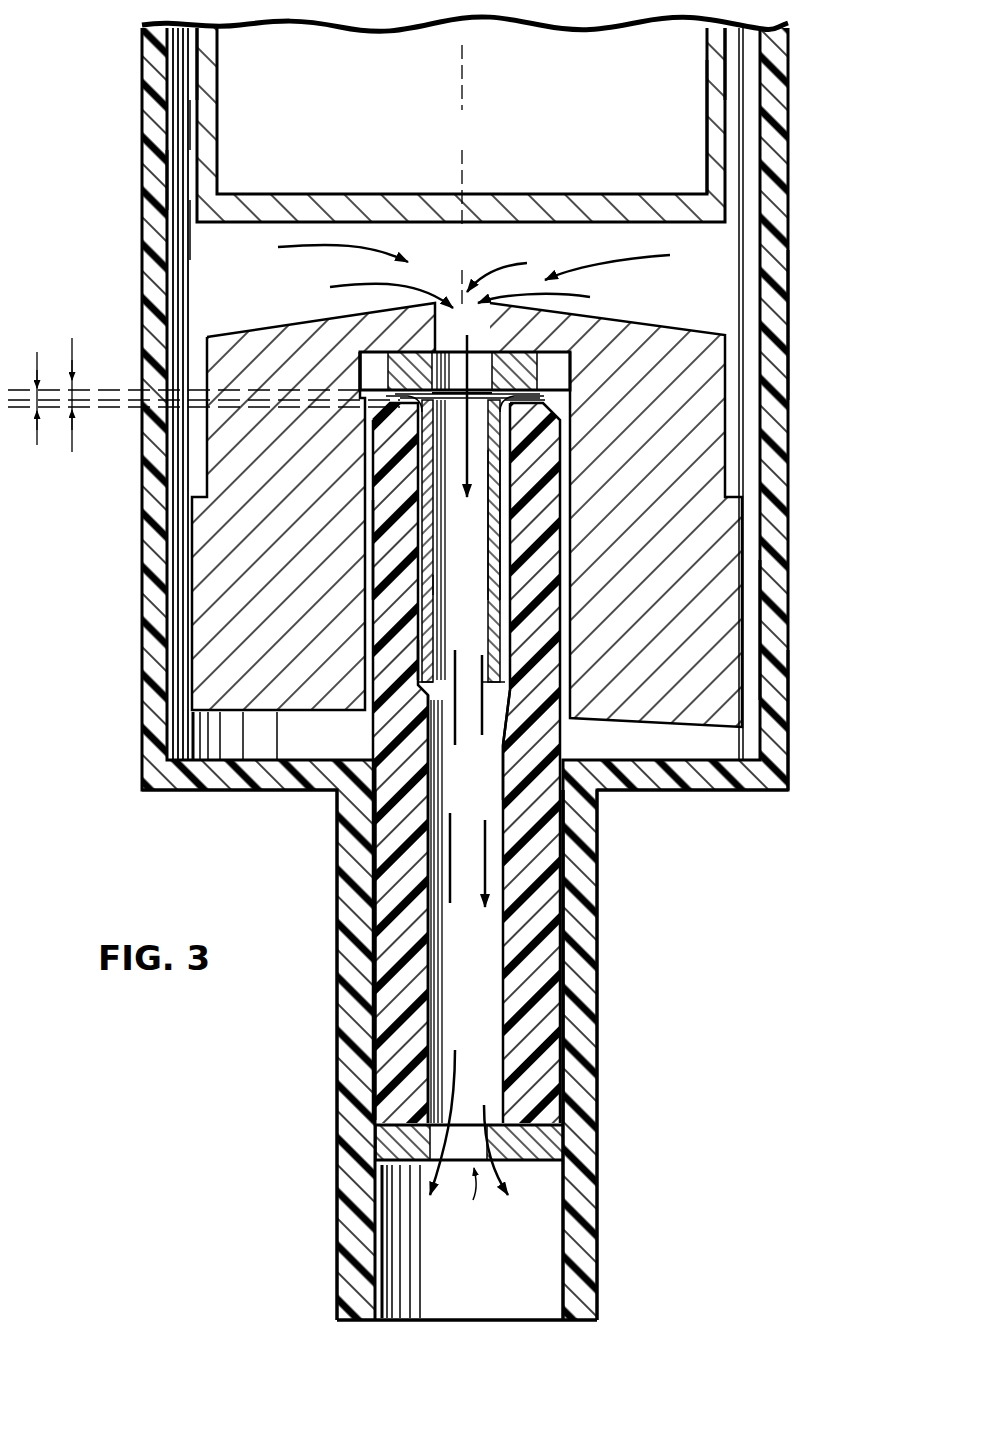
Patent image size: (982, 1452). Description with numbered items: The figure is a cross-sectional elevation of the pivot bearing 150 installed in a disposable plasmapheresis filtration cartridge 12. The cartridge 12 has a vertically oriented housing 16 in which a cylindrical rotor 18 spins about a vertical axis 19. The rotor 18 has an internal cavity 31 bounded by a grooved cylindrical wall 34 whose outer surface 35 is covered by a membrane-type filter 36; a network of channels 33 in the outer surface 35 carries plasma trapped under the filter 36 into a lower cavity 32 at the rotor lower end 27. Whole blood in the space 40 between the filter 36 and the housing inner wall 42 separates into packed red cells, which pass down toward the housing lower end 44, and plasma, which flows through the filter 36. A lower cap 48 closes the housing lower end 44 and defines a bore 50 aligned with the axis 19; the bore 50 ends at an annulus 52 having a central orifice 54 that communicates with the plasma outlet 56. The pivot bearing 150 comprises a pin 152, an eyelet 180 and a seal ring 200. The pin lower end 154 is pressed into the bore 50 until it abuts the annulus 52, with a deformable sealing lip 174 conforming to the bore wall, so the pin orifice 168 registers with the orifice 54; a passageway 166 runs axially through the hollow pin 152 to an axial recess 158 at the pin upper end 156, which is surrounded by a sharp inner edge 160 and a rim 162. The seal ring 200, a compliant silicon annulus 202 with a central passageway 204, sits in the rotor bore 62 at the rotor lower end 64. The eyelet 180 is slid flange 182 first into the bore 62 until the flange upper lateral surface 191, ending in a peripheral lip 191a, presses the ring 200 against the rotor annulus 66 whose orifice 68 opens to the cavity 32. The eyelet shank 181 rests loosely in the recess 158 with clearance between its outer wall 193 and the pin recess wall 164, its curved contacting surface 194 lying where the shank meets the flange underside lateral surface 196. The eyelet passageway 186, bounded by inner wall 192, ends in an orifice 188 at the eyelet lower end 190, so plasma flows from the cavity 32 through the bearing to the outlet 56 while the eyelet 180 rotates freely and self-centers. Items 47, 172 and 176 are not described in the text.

The cartridge 12 is at (818, 349).
The housing 16 is at (786, 497).
The rotor 18 is at (740, 174).
The axis of rotation 19 is at (465, 73).
The rotor lower end 27 is at (748, 631).
The internal cavity 31 is at (336, 86).
The lower cavity 32 is at (282, 284).
The channels 33 is at (192, 123).
The grooved cylindrical wall 34 is at (716, 187).
The outer surface 35 is at (190, 83).
The membrane-type filter 36 is at (192, 109).
The space 40 is at (170, 175).
The inner wall 42 is at (182, 237).
The lower end of housing 44 is at (800, 771).
The housing bottom wall 47 is at (793, 691).
The lower cap 48 is at (163, 800).
The bore 50 is at (556, 989).
The annulus 52 is at (402, 1137).
The orifice 54 is at (428, 1241).
The plasma outlet 56 is at (535, 1296).
The rotor bore 62 is at (380, 626).
The rotor lower end 64 is at (330, 699).
The annulus 66 is at (540, 335).
The orifice 68 is at (460, 273).
The pivot bearing 150 is at (366, 825).
The pin 152 is at (390, 917).
The pin lower end 154 is at (380, 1127).
The pin upper end 156 is at (382, 494).
The axial recess 158 is at (433, 522).
The inner edge 160 is at (384, 439).
The rim 162 is at (545, 398).
The pin recess wall 164 is at (502, 568).
The passageway 166 is at (507, 752).
The orifice 168 is at (474, 1091).
The outer sleeve 172 is at (372, 853).
The pin sealing lip 174 is at (593, 857).
The valve plate 176 is at (403, 399).
The eyelet 180 is at (508, 476).
The shank 181 is at (502, 528).
The flange 182 is at (513, 373).
The passageway 186 is at (373, 556).
The orifice 188 is at (514, 690).
The eyelet lower end 190 is at (418, 655).
The upper lateral surface 191 is at (386, 376).
The peripheral lip 191a is at (560, 394).
The inner eyelet wall 192 is at (445, 592).
The shank outer wall 193 is at (504, 646).
The contacting surface 194 is at (562, 425).
The underside lateral surface 196 is at (396, 413).
The seal ring 200 is at (540, 387).
The annulus 202 is at (386, 361).
The passageway 204 is at (470, 359).